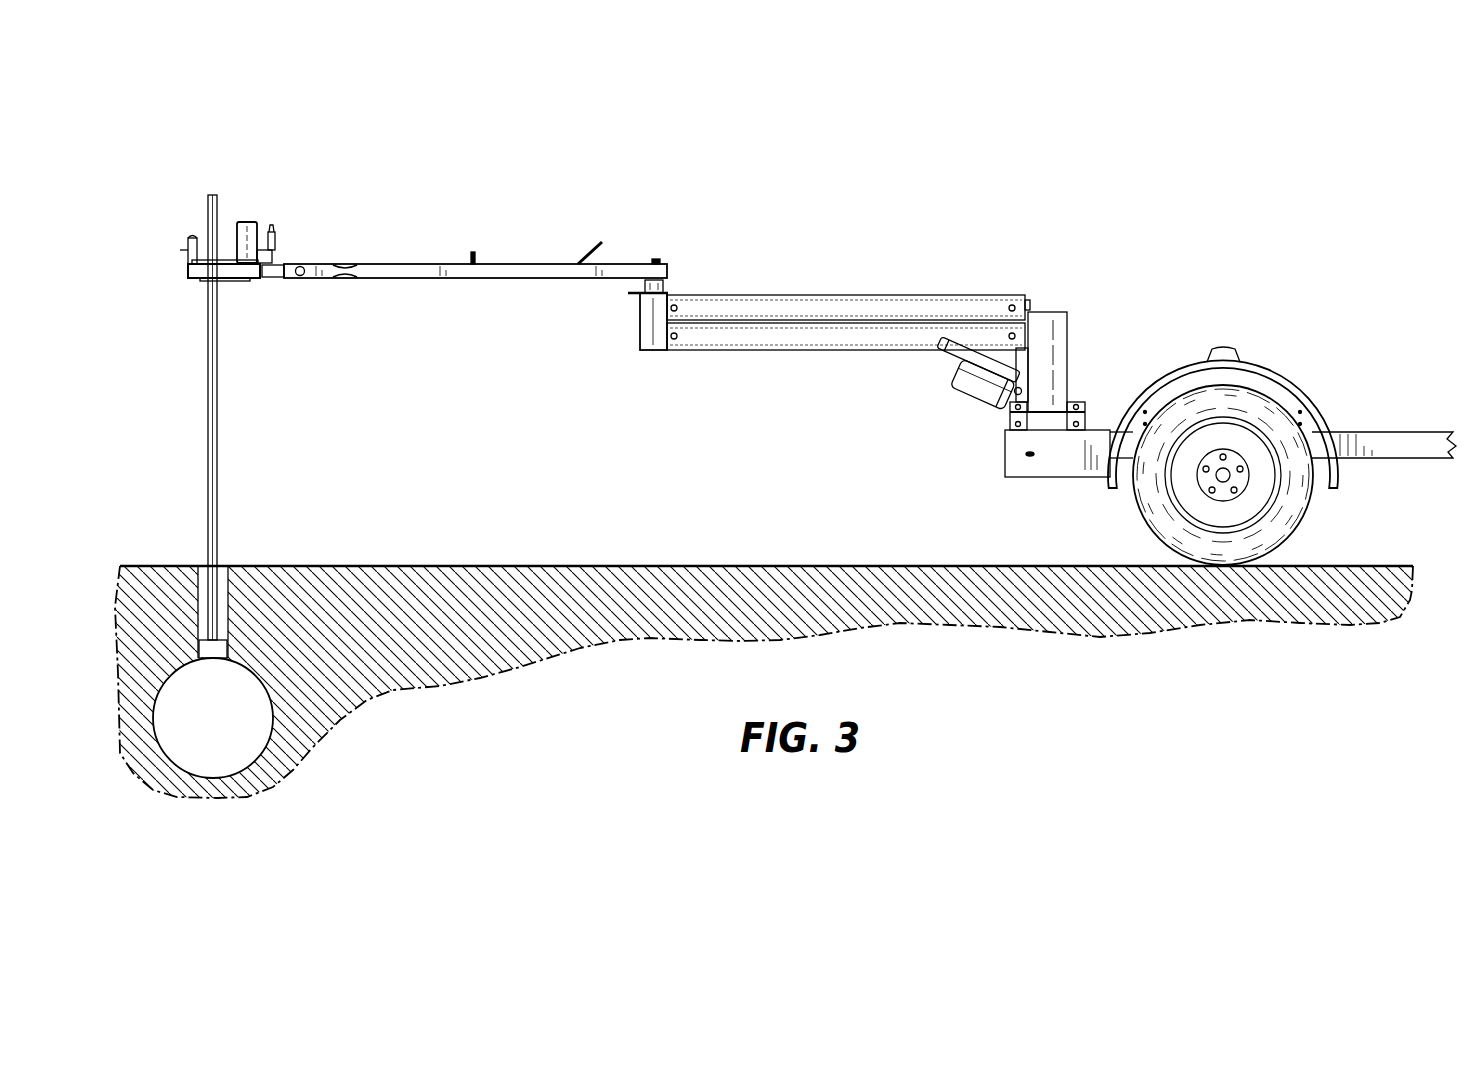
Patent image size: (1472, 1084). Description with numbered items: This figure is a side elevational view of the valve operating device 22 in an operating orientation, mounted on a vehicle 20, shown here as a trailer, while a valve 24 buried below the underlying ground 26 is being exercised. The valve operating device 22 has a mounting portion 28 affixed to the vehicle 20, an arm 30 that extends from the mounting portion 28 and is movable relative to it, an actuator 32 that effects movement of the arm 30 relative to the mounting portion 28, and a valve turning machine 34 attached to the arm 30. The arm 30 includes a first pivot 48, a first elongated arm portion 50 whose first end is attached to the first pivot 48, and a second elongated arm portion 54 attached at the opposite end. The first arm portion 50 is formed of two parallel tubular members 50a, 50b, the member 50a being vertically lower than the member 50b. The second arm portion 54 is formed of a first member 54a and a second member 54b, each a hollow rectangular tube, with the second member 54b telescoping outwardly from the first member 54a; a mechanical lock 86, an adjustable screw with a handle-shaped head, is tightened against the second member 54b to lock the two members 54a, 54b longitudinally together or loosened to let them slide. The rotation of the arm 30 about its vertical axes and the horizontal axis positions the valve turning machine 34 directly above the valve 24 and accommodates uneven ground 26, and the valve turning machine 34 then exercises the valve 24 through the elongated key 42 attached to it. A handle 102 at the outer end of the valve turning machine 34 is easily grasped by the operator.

The vehicle 20 is at (1378, 428).
The valve operating device 22 is at (998, 245).
The valve 24 is at (232, 740).
The ground 26 is at (385, 566).
The mounting portion 28 is at (1002, 426).
The arm 30 is at (791, 292).
The actuator 32 is at (947, 373).
The valve turning machine 34 is at (263, 213).
The elongated key 42 is at (208, 400).
The first pivot 48 is at (1070, 338).
The first elongated arm portion 50 is at (829, 325).
The elongated member 50a is at (830, 338).
The elongated member 50b is at (845, 305).
The second elongated arm portion 54 is at (427, 265).
The first member 54a is at (383, 280).
The second member 54b is at (268, 282).
The mechanical lock 86 is at (343, 263).
The handle 102 is at (188, 253).